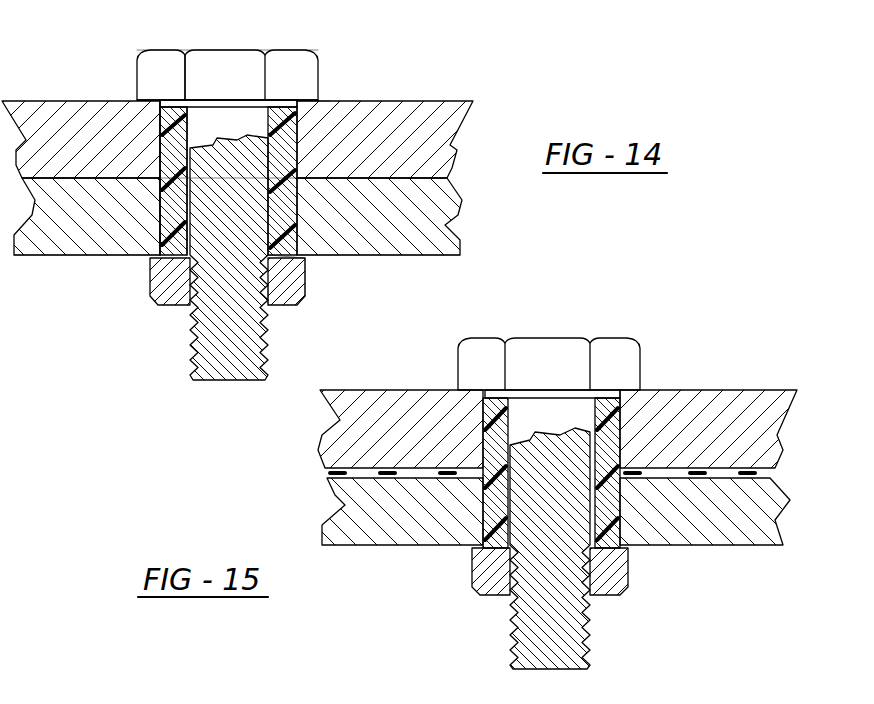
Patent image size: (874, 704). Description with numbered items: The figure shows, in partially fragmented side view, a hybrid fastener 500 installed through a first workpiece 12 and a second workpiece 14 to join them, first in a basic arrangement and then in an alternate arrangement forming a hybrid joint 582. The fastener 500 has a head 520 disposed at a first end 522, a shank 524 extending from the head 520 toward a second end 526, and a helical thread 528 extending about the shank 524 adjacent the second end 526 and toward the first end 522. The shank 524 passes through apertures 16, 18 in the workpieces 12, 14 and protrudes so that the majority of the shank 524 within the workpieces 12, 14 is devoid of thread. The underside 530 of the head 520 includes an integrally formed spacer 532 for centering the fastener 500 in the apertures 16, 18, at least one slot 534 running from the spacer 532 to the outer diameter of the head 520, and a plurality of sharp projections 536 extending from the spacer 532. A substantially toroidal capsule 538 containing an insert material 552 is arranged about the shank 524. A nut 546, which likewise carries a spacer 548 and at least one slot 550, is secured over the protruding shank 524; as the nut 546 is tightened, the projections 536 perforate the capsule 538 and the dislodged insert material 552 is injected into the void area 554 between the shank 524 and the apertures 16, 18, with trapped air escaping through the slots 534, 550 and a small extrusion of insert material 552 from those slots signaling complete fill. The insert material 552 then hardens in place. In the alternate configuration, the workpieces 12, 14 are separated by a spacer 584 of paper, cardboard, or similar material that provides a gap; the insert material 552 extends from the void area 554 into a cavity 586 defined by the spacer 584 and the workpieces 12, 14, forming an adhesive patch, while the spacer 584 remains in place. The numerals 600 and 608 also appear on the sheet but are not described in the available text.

In FIG. 14, the first workpiece 12 is at (428, 148).
In FIG. 15, the first workpiece 12 is at (352, 432).
In FIG. 14, the second workpiece 14 is at (430, 213).
In FIG. 15, the second workpiece 14 is at (352, 505).
In FIG. 14, the aperture 16 is at (300, 180).
In FIG. 14, the aperture 18 is at (418, 255).
In FIG. 14, the hybrid fastener 500 is at (123, 48).
In FIG. 15, the hybrid fastener 500 is at (613, 310).
In FIG. 14, the head 520 is at (303, 70).
In FIG. 14, the first end 522 is at (120, 84).
In FIG. 14, the shank 524 is at (165, 233).
In FIG. 14, the second end 526 is at (150, 321).
In FIG. 14, the helical thread 528 is at (189, 335).
In FIG. 14, the underside 530 is at (197, 113).
In FIG. 14, the spacer 532 is at (250, 112).
In FIG. 14, the slot 534 is at (325, 101).
In FIG. 14, the sharp projections 536 is at (338, 101).
In FIG. 14, the capsule 538 is at (167, 200).
In FIG. 15, the capsule 538 is at (480, 426).
In FIG. 14, the nut 546 is at (283, 300).
In FIG. 14, the spacer 548 is at (286, 282).
In FIG. 14, the slot 550 is at (302, 258).
In FIG. 14, the insert material 552 is at (290, 155).
In FIG. 15, the insert material 552 is at (622, 525).
In FIG. 14, the void area 554 is at (167, 148).
In FIG. 15, the void area 554 is at (480, 550).
In FIG. 15, the hybrid joint 582 is at (690, 366).
In FIG. 15, the spacer 584 is at (345, 473).
In FIG. 15, the cavity 586 is at (440, 485).
In FIG. 15, the fastener assembly 600 is at (143, 700).
In FIG. 15, the plate 608 is at (247, 703).